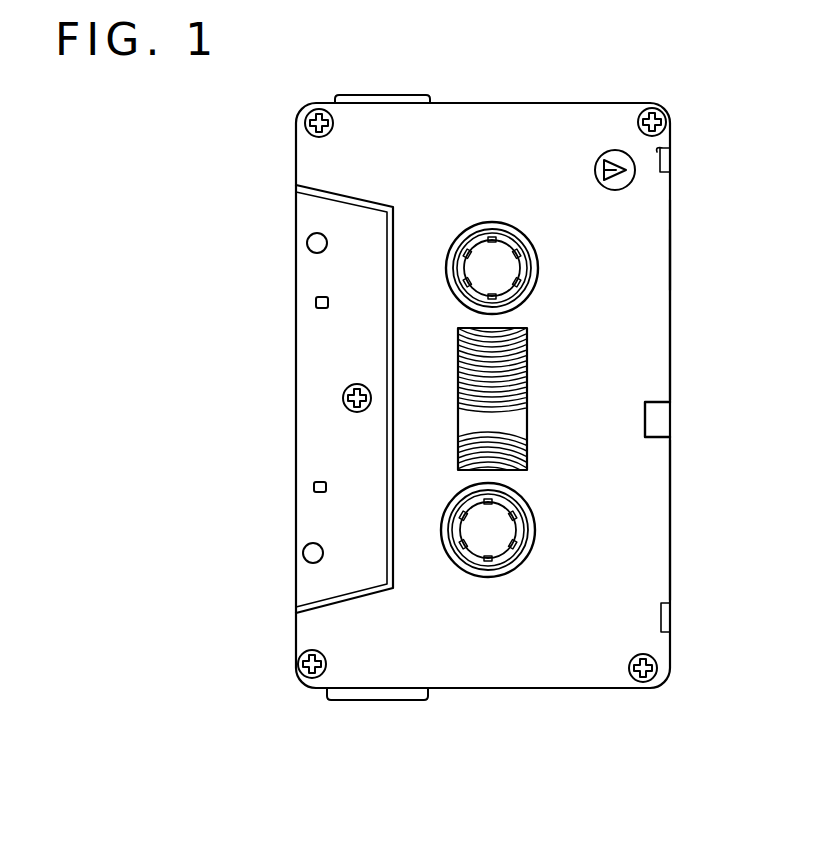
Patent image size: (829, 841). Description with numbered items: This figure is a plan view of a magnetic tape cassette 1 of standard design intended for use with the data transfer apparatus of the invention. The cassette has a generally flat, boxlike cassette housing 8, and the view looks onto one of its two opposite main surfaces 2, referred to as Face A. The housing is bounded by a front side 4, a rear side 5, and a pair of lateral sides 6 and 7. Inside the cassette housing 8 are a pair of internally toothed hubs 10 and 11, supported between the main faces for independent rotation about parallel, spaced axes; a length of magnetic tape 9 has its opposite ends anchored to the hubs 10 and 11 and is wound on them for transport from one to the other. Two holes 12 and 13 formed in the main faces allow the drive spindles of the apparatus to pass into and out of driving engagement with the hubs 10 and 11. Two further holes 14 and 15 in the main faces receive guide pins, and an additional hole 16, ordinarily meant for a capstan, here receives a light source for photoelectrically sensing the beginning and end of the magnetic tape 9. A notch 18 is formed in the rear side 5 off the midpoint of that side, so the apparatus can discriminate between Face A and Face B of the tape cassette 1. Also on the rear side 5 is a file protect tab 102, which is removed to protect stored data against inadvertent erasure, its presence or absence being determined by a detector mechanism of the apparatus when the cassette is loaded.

The tape cassette 1 is at (671, 380).
The main surface 2 is at (664, 220).
The front side 4 is at (296, 320).
The rear side 5 is at (670, 495).
The lateral side 6 is at (540, 103).
The lateral side 7 is at (545, 688).
The cassette housing 8 is at (672, 258).
The magnetic tape 9 is at (527, 380).
The internally toothed hub 10 is at (500, 233).
The internally toothed hub 11 is at (508, 562).
The hole 12 is at (476, 228).
The hole 13 is at (469, 562).
The hole 14 is at (316, 300).
The hole 15 is at (314, 487).
The hole 16 is at (307, 243).
The notch 18 is at (661, 431).
The file protect tab 102 is at (668, 143).